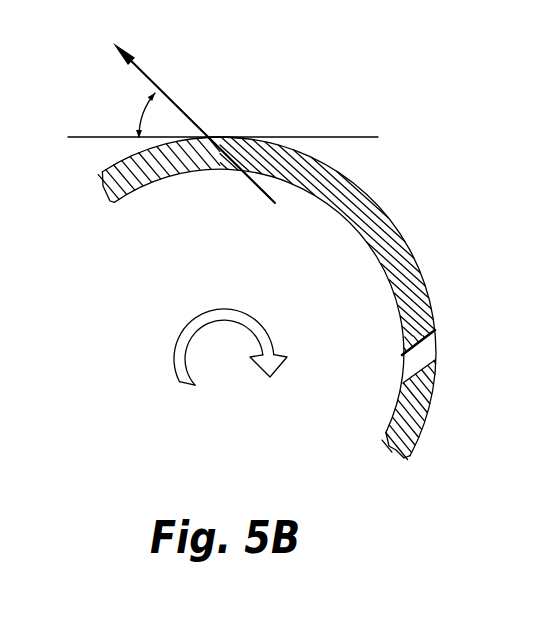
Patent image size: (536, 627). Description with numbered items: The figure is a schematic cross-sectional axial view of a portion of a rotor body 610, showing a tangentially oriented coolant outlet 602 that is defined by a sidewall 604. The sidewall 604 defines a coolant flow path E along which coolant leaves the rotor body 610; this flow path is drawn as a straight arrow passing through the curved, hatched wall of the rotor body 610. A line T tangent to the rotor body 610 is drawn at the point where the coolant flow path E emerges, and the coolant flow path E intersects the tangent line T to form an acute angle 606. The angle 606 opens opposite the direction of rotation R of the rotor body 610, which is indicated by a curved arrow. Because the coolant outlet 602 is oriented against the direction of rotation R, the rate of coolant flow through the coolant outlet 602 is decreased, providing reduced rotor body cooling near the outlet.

The coolant outlet 602 is at (215, 133).
The sidewall 604 is at (246, 160).
The acute angle 606 is at (141, 112).
The rotor body 610 is at (384, 181).
The tangent line T is at (332, 137).
The coolant flow path E is at (262, 194).
The direction of rotation R is at (181, 347).